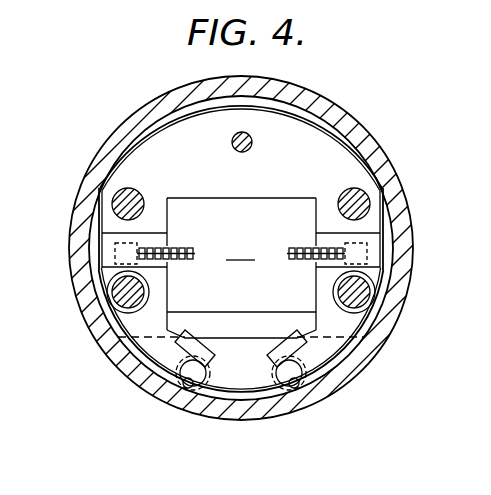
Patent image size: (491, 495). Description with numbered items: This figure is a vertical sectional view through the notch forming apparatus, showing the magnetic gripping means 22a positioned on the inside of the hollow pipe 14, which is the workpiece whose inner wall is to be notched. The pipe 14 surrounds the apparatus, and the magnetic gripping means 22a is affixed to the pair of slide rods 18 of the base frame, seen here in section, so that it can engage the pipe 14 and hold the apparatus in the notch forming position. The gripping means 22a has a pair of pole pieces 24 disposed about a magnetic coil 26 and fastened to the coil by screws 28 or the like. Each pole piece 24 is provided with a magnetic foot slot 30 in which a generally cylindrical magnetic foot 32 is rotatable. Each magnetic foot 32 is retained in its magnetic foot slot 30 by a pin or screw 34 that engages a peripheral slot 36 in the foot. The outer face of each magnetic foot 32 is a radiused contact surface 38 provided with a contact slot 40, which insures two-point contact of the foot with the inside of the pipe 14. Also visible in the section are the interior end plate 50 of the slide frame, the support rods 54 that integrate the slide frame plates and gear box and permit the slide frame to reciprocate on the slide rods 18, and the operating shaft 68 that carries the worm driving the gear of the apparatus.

The hollow pipe 14 is at (352, 118).
The slide rods 18 is at (112, 296).
The magnetic gripping means 22a is at (219, 197).
The pole pieces 24 is at (138, 344).
The magnetic coil 26 is at (241, 268).
The screws 28 is at (181, 246).
The magnetic foot slot 30 is at (268, 363).
The magnetic foot 32 is at (271, 382).
The pin or screw 34 is at (150, 388).
The peripheral slot 36 is at (175, 399).
The radiused contact surface 38 is at (198, 393).
The contact slot 40 is at (188, 388).
The interior end plate 50 is at (167, 132).
The support rods 54 is at (148, 175).
The operating shaft 68 is at (253, 142).